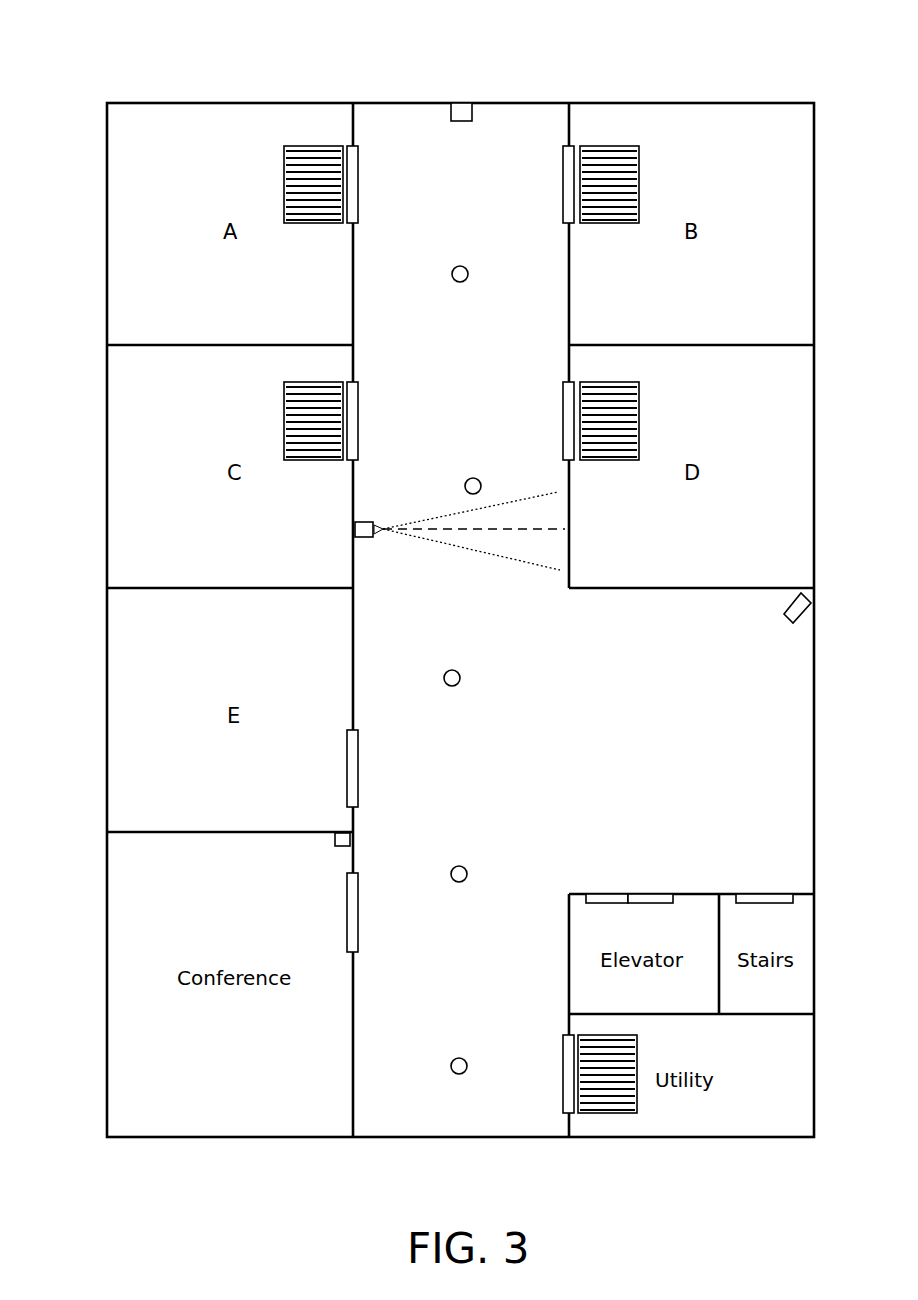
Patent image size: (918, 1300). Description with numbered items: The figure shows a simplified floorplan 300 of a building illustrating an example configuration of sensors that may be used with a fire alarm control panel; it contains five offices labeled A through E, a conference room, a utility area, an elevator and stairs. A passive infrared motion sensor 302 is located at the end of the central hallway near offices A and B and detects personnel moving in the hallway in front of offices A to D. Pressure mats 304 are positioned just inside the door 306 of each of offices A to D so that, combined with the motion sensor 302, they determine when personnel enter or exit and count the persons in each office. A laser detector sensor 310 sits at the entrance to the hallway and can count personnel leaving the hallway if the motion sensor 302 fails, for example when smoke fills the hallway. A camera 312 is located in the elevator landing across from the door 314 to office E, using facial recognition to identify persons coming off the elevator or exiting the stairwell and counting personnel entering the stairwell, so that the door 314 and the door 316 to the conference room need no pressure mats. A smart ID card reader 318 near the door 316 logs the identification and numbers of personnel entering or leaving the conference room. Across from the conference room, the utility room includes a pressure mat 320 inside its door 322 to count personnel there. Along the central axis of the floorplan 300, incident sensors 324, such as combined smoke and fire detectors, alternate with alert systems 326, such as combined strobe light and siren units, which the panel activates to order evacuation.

The floorplan 300 is at (670, 66).
The passive infrared (PIR) motion sensor 302 is at (466, 101).
The pressure mat 304 is at (315, 224).
The door 306 is at (359, 162).
The laser detector sensor 310 is at (362, 538).
The camera 312 is at (790, 622).
The door 314 is at (359, 762).
The door 316 is at (359, 922).
The smart ID card reader 318 is at (340, 848).
The pressure mat 320 is at (608, 1114).
The door 322 is at (561, 1100).
The incident sensor 324 is at (462, 266).
The alert system 326 is at (472, 478).